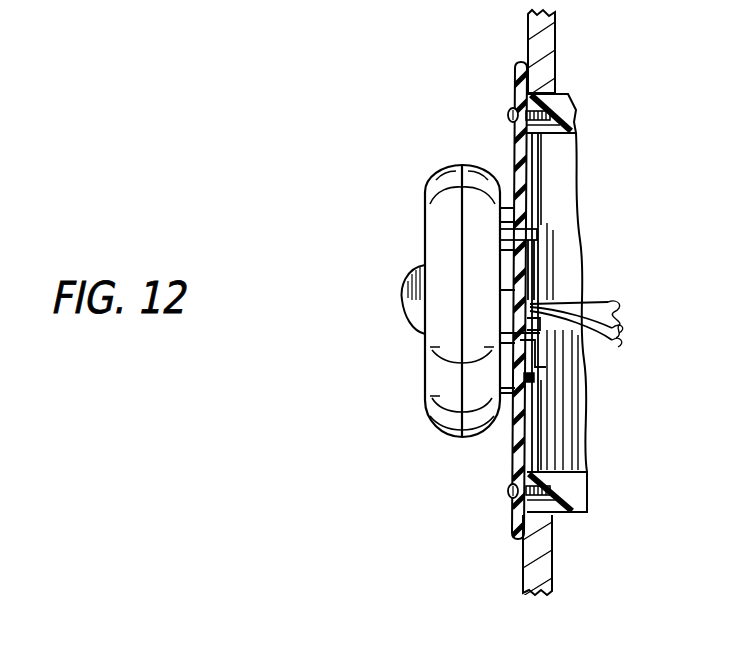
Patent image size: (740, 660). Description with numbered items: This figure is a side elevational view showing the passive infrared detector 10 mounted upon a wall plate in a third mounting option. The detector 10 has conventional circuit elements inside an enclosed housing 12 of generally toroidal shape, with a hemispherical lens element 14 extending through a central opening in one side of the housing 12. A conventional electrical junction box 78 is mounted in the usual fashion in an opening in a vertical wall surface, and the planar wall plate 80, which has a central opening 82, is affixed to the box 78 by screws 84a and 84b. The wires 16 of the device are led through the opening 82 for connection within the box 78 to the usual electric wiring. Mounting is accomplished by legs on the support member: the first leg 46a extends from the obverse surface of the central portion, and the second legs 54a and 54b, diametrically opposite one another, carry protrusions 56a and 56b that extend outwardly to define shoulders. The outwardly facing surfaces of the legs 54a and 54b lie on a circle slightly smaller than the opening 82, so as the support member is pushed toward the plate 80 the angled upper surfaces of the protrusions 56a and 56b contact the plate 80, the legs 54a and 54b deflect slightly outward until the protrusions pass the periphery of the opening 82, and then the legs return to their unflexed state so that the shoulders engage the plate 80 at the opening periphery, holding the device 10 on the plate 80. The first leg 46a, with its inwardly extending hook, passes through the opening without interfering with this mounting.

The passive infrared detector 10 is at (410, 237).
The housing 12 is at (425, 382).
The hemispherical lens element 14 is at (400, 305).
The wires 16 is at (602, 316).
The first leg 46a is at (540, 333).
The second leg 54a is at (537, 232).
The second leg 54b is at (534, 378).
The protrusion 56a is at (540, 200).
The protrusion 56b is at (545, 398).
The electrical junction box 78 is at (577, 512).
The wall plate 80 is at (513, 141).
The central opening 82 is at (528, 273).
The screw 84a is at (508, 114).
The screw 84b is at (508, 493).